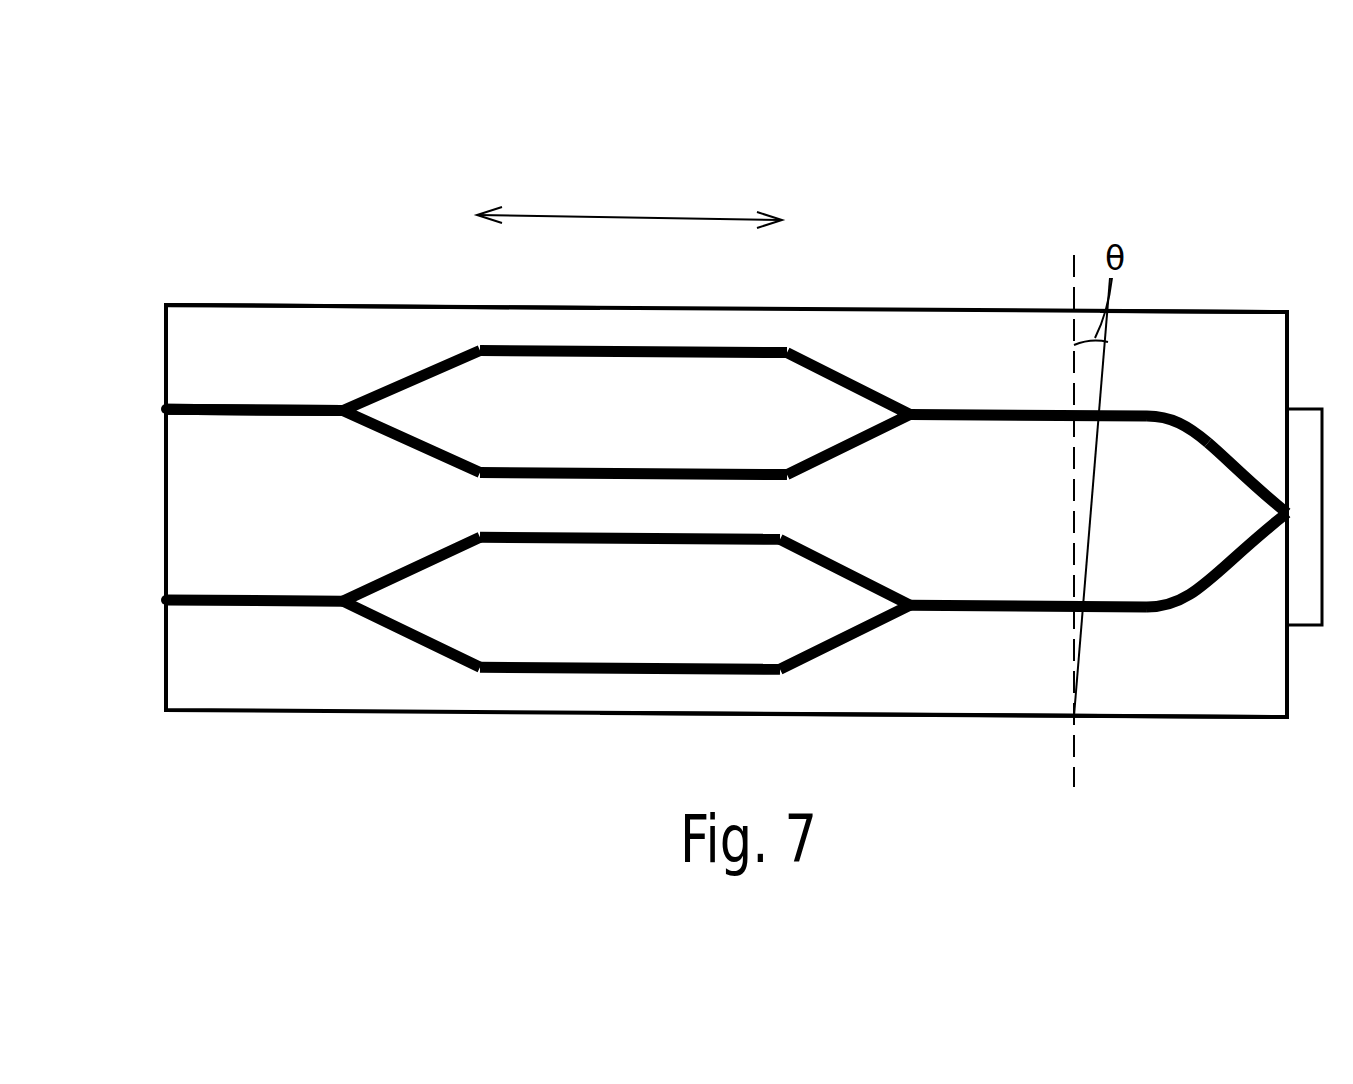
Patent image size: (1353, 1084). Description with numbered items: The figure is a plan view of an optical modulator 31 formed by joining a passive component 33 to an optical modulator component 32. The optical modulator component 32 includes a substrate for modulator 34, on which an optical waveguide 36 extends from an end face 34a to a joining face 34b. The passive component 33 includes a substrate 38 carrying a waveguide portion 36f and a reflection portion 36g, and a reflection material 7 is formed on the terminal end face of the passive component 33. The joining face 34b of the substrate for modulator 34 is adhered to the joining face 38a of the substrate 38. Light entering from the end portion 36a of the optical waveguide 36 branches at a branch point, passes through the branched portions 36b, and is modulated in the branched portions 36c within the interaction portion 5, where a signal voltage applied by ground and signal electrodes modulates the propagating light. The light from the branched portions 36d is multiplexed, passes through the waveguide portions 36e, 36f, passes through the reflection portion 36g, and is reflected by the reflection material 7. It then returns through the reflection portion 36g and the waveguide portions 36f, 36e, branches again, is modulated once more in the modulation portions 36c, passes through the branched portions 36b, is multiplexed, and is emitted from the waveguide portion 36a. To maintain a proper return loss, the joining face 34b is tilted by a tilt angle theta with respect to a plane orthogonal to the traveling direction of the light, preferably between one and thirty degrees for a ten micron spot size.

The interaction portion 5 is at (625, 217).
The reflection material 7 is at (1313, 627).
The optical modulator 31 is at (726, 456).
The optical modulator component 32 is at (905, 303).
The passive component 33 is at (1172, 308).
The substrate for modulator 34 is at (332, 303).
The end face 34a is at (165, 355).
The joining face 34b is at (1113, 387).
The optical waveguide 36 is at (303, 398).
The end portion 36a is at (260, 418).
The branched portions 36b is at (397, 378).
The branched portions 36c is at (640, 357).
The branched portions 36d is at (858, 376).
The waveguide portion 36e is at (978, 405).
The waveguide portion 36f is at (1147, 430).
The reflection portion 36g is at (1232, 460).
The substrate 38 is at (1157, 702).
The joining face 38a is at (1093, 503).